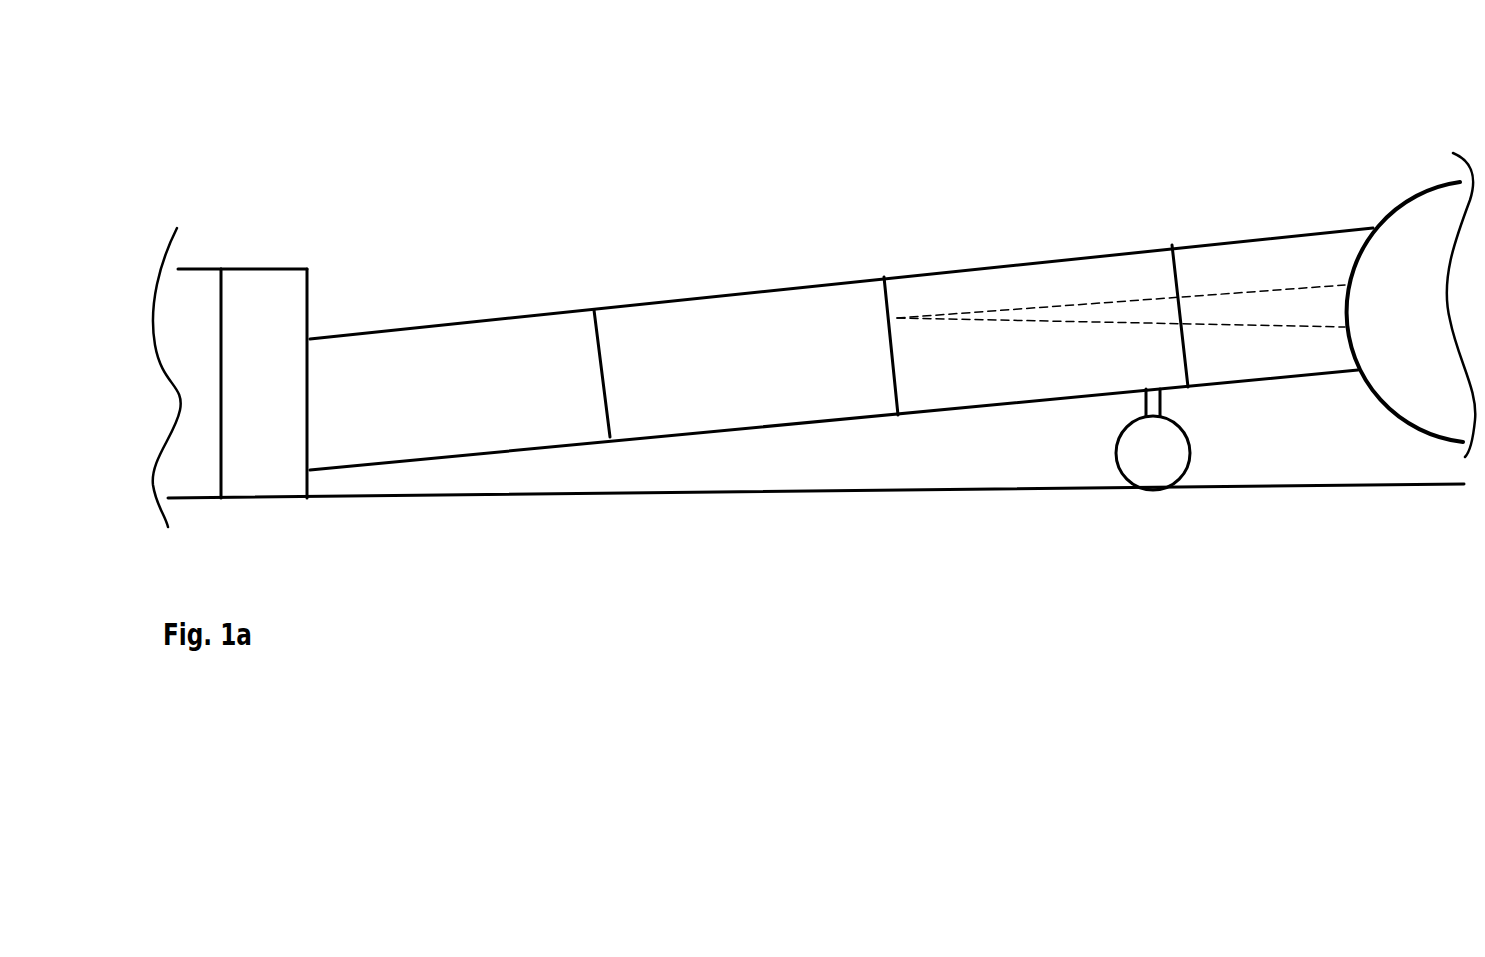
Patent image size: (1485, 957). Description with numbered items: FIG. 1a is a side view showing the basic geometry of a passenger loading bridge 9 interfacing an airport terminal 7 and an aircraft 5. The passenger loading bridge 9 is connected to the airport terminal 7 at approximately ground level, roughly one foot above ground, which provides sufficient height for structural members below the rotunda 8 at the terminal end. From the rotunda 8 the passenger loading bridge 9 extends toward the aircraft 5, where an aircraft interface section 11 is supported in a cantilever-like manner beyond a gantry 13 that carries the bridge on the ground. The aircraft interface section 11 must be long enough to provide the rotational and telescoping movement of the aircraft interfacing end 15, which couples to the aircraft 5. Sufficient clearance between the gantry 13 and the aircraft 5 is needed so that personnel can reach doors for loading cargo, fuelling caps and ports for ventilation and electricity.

The aircraft 5 is at (1417, 212).
The airport terminal 7 is at (178, 297).
The rotunda 8 is at (265, 310).
The passenger loading bridge 9 is at (724, 306).
The aircraft interface section 11 is at (1272, 243).
The gantry 13 is at (1147, 445).
The aircraft interfacing end 15 is at (1345, 288).